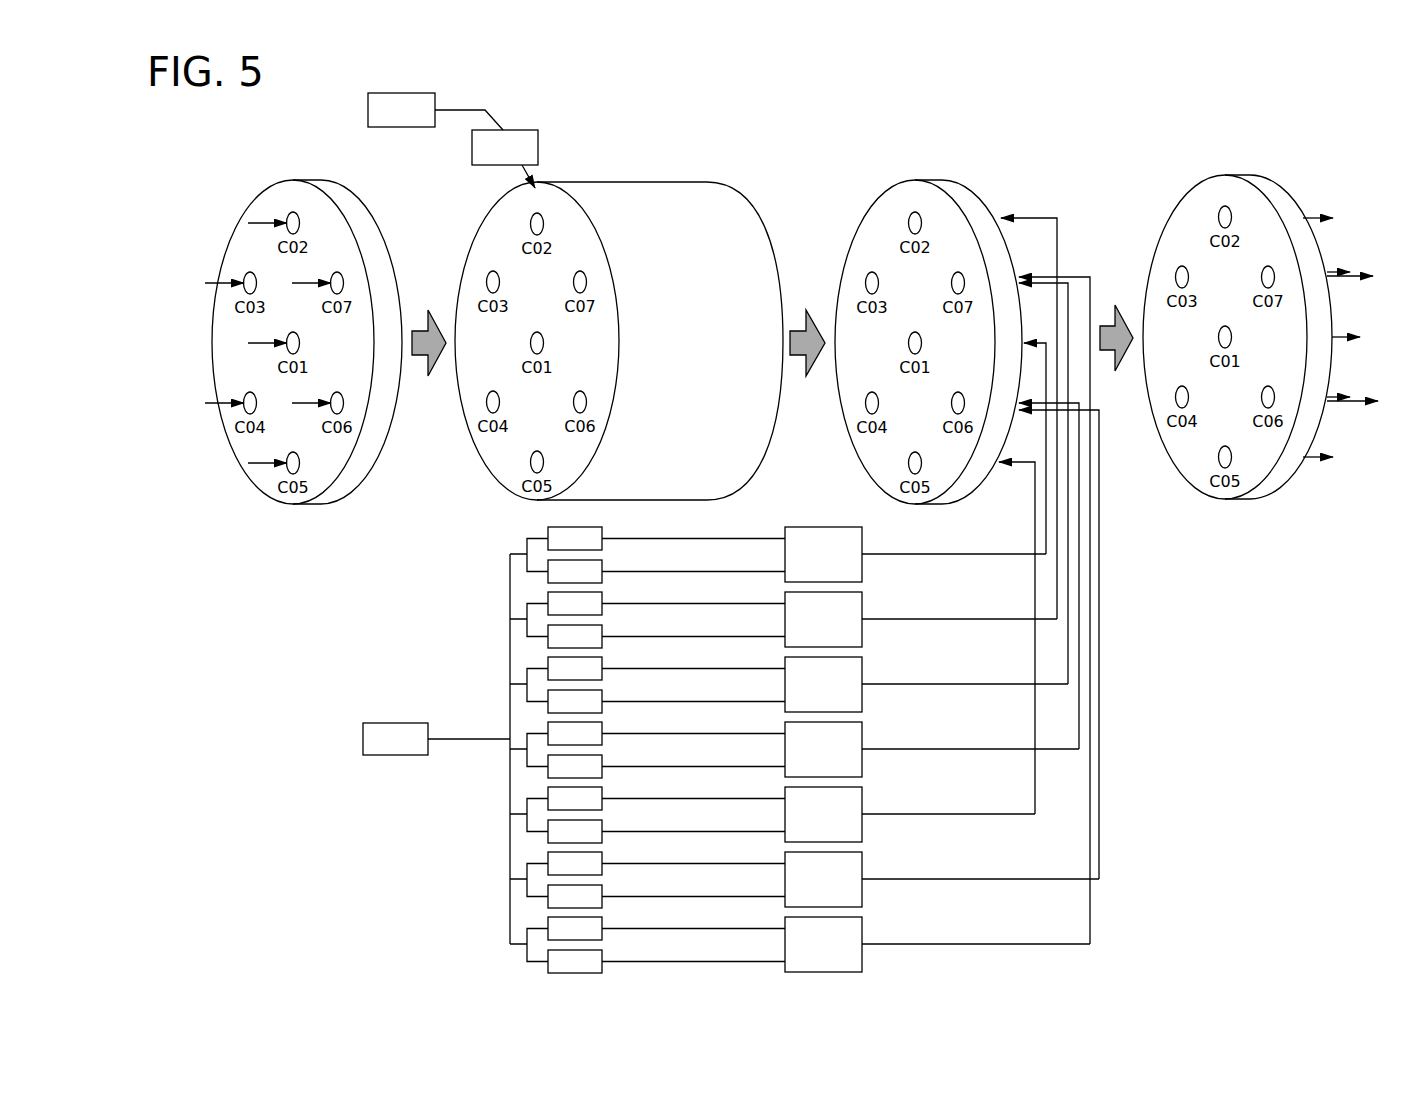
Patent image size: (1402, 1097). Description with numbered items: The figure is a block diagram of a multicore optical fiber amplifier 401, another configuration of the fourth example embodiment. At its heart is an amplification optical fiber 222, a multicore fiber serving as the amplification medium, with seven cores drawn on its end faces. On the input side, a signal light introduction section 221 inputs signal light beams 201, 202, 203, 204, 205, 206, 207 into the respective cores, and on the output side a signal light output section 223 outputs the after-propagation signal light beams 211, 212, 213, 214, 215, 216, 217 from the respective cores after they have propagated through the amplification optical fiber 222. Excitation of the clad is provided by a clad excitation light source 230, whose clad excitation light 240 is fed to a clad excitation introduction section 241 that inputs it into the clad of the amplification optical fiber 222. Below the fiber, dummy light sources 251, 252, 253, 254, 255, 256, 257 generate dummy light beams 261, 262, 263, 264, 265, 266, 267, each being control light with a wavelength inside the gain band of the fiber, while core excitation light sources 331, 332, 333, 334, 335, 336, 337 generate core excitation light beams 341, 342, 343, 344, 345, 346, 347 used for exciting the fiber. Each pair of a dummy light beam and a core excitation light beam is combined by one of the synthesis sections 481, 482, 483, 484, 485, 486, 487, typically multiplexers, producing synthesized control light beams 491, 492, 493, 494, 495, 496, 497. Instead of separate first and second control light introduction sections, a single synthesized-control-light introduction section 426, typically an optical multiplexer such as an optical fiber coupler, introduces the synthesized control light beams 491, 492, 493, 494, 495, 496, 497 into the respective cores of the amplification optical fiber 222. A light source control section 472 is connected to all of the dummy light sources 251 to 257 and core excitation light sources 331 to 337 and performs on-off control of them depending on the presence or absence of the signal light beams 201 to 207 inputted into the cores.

The signal light beam 201 is at (257, 343).
The signal light beam 202 is at (260, 223).
The signal light beam 203 is at (226, 283).
The signal light beam 204 is at (227, 405).
The signal light beam 205 is at (260, 463).
The signal light beam 206 is at (303, 405).
The signal light beam 207 is at (310, 280).
The after-propagation signal light beam 211 is at (1353, 335).
The after-propagation signal light beam 212 is at (1312, 216).
The after-propagation signal light beam 213 is at (1337, 272).
The after-propagation signal light beam 214 is at (1352, 396).
The after-propagation signal light beam 215 is at (1313, 459).
The after-propagation signal light beam 216 is at (1350, 403).
The after-propagation signal light beam 217 is at (1360, 276).
The signal light introduction section 221 is at (322, 180).
The amplification optical fiber 222 is at (608, 181).
The signal light output section 223 is at (1247, 176).
The clad excitation light source 230 is at (388, 93).
The clad excitation light 240 is at (455, 108).
The clad excitation introduction section 241 is at (505, 130).
The dummy light source 251 is at (604, 564).
The dummy light source 252 is at (604, 629).
The dummy light source 253 is at (604, 694).
The dummy light source 254 is at (604, 759).
The dummy light source 255 is at (604, 824).
The dummy light source 256 is at (604, 889).
The dummy light source 257 is at (604, 954).
The dummy light beam 261 is at (695, 569).
The dummy light beam 262 is at (695, 634).
The dummy light beam 263 is at (695, 699).
The dummy light beam 264 is at (695, 764).
The dummy light beam 265 is at (695, 829).
The dummy light beam 266 is at (695, 894).
The dummy light beam 267 is at (695, 959).
The core excitation light source 331 is at (604, 531).
The core excitation light source 332 is at (604, 596).
The core excitation light source 333 is at (604, 661).
The core excitation light source 334 is at (604, 726).
The core excitation light source 335 is at (604, 791).
The core excitation light source 336 is at (604, 856).
The core excitation light source 337 is at (604, 921).
The core excitation light beam 341 is at (695, 536).
The core excitation light beam 342 is at (695, 601).
The core excitation light beam 343 is at (695, 666).
The core excitation light beam 344 is at (695, 731).
The core excitation light beam 345 is at (695, 796).
The core excitation light beam 346 is at (695, 861).
The core excitation light beam 347 is at (695, 926).
The multicore optical fiber amplifier 401 is at (822, 124).
The synthesized-control-light introduction section 426 is at (945, 180).
The light source control section 472 is at (412, 723).
The synthesis section 481 is at (864, 542).
The synthesis section 482 is at (864, 607).
The synthesis section 483 is at (864, 672).
The synthesis section 484 is at (864, 737).
The synthesis section 485 is at (864, 802).
The synthesis section 486 is at (864, 867).
The synthesis section 487 is at (864, 932).
The synthesized control light beam 491 is at (1040, 342).
The synthesized control light beam 492 is at (1020, 217).
The synthesized control light beam 493 is at (1037, 278).
The synthesized control light beam 494 is at (1035, 407).
The synthesized control light beam 495 is at (1008, 465).
The synthesized control light beam 496 is at (1032, 413).
The synthesized control light beam 497 is at (1081, 276).